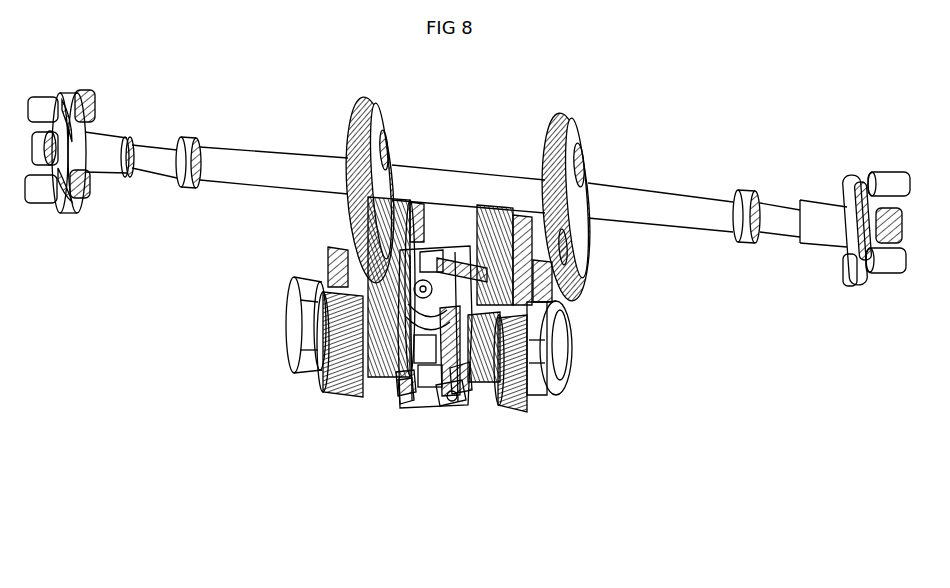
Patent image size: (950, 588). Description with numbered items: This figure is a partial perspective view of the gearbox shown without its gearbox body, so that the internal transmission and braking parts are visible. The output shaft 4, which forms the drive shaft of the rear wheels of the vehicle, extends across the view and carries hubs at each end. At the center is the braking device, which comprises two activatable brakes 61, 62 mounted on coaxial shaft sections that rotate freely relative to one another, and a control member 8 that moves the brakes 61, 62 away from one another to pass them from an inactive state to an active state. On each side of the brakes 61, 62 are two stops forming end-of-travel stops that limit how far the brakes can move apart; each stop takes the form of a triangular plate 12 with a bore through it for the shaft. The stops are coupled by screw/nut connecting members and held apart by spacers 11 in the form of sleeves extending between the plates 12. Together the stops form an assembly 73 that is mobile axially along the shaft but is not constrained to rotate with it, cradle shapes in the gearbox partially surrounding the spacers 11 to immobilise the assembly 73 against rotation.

The output shaft 4 is at (467, 188).
The control member 8 is at (324, 356).
The spacer 11 is at (421, 385).
The plate 12 is at (431, 402).
The brake 61 is at (382, 379).
The brake 62 is at (468, 428).
The assembly 73 is at (440, 482).